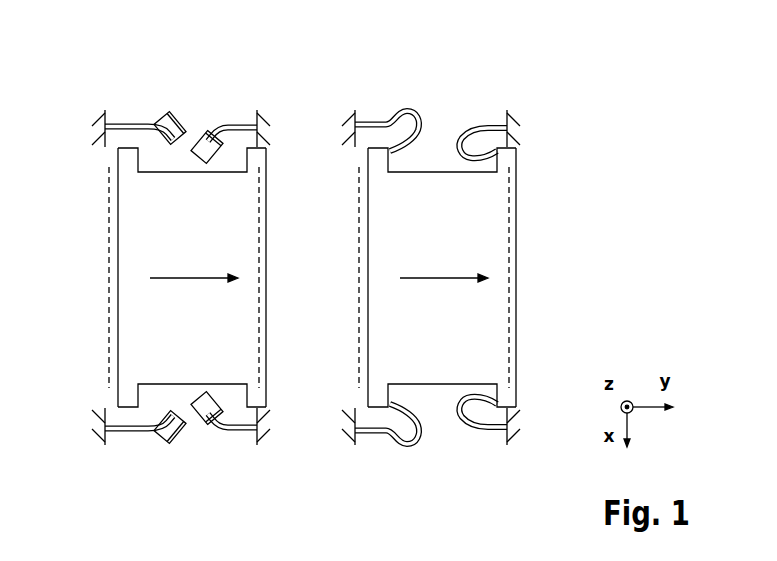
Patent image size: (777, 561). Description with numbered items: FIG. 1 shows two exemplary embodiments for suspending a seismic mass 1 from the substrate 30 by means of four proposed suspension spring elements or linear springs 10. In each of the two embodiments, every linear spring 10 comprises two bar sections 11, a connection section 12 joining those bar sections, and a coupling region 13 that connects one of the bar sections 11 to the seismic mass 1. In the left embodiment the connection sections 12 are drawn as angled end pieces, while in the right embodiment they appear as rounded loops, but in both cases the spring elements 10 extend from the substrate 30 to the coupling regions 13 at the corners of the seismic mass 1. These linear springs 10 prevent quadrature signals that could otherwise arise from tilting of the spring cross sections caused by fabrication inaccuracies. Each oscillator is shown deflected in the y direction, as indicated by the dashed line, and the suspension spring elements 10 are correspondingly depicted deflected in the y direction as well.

The seismic mass 1 is at (319, 276).
The suspension spring element 10 is at (306, 277).
The bar section 11 is at (141, 123).
The connection section 12 is at (197, 134).
The coupling region 13 is at (128, 164).
The substrate 30 is at (102, 116).